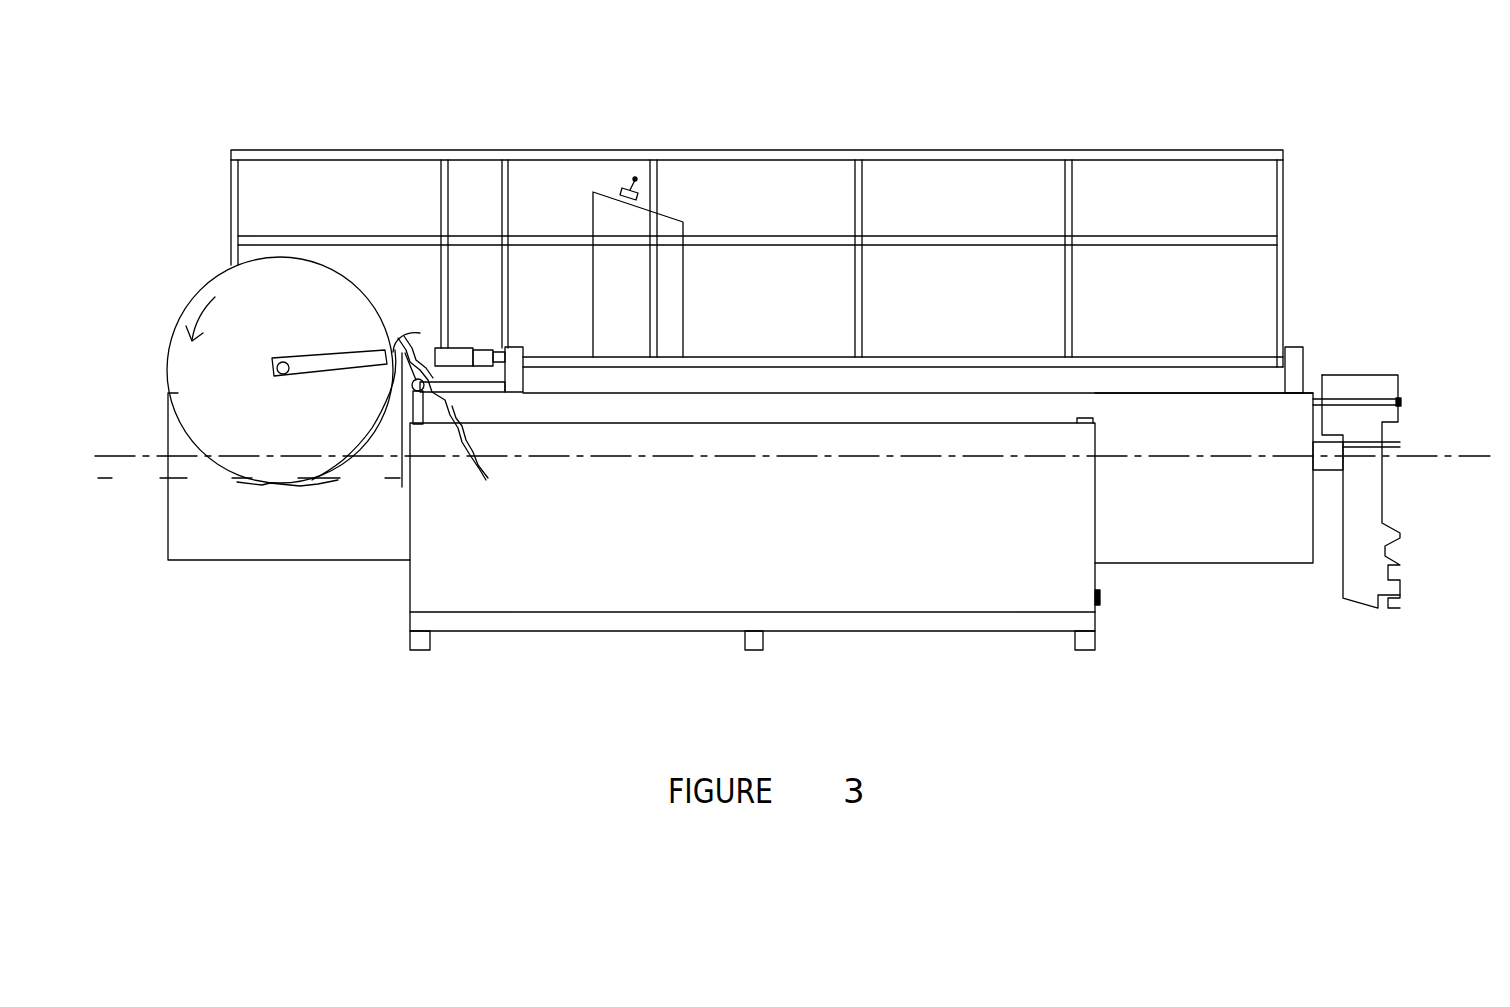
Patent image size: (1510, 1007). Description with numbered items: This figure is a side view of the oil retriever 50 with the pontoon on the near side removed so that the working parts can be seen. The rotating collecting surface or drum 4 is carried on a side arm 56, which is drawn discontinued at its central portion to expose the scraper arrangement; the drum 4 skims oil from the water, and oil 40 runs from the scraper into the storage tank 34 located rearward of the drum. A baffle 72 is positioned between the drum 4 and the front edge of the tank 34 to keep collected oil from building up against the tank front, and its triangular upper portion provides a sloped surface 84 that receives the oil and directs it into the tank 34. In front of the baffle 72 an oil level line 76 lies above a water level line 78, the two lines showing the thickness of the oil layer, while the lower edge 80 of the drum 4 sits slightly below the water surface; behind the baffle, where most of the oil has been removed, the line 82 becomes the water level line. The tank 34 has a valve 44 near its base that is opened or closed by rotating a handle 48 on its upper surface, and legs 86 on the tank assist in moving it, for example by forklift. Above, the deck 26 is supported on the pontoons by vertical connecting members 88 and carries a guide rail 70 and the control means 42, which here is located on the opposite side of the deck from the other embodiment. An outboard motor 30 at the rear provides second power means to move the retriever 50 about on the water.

The collecting surface 4 is at (230, 280).
The deck 26 is at (1174, 316).
The outboard motor 30 is at (1380, 454).
The storage tank 34 is at (861, 550).
The oil 40 is at (505, 467).
The control means 42 is at (669, 267).
The valve 44 is at (1138, 594).
The handle 48 is at (1120, 419).
The retriever 50 is at (1139, 95).
The side arm 56 is at (329, 325).
The guide rail 70 is at (757, 226).
The baffle 72 is at (399, 430).
The oil level line 76 is at (261, 456).
The water level line 78 is at (249, 513).
The lower edge 80 is at (287, 514).
The water level line 82 is at (750, 491).
The sloped surface 84 is at (425, 393).
The legs 86 is at (770, 669).
The vertical connecting members 88 is at (886, 334).